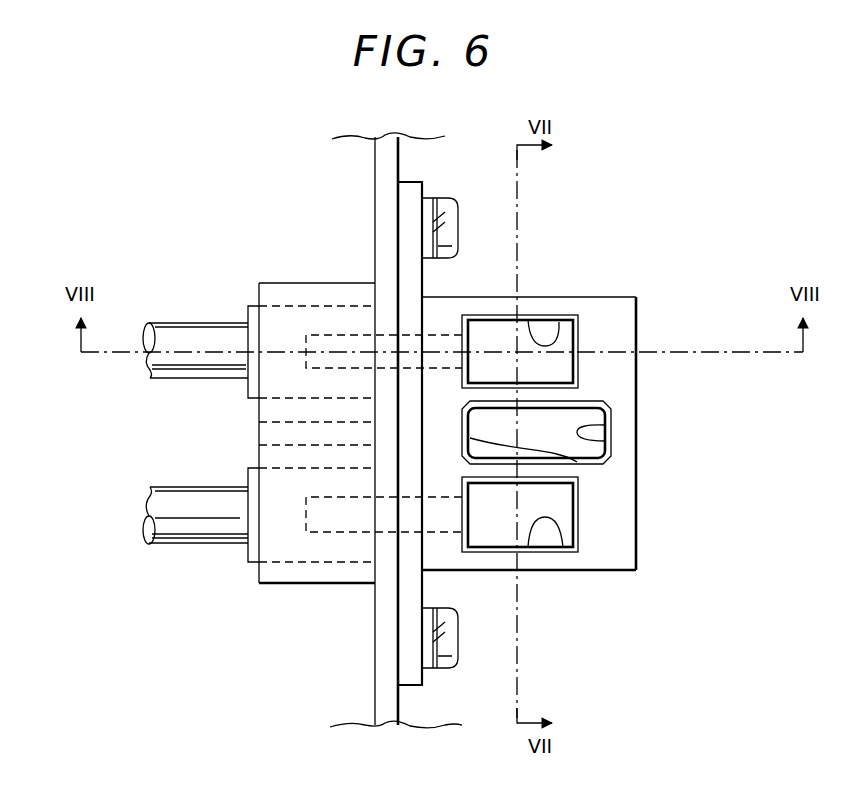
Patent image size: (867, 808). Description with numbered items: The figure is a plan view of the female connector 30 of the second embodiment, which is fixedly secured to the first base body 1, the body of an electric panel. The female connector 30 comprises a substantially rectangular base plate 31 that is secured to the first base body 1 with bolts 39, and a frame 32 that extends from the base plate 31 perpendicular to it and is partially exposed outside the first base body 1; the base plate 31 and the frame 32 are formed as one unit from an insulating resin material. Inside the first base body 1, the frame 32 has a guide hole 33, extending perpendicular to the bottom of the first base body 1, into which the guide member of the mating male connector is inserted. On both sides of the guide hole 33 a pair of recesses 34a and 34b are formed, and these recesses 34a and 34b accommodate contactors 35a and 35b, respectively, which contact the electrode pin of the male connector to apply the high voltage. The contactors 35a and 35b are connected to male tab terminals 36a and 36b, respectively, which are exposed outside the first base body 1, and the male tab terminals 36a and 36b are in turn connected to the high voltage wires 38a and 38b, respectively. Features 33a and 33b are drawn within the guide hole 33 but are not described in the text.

The first base body 1 is at (388, 702).
The female connector 30 is at (230, 173).
The base plate 31 is at (408, 655).
The frame 32 is at (640, 339).
The guide hole 33 is at (556, 425).
The engaging tongue 33a is at (605, 441).
The guide surface 33b is at (577, 462).
The recess 34a is at (579, 337).
The recess 34b is at (580, 523).
The contactor 35a is at (559, 322).
The contactor 35b is at (563, 547).
The male tab terminal 36a is at (338, 347).
The male tab terminal 36b is at (330, 515).
The high voltage wire 38a is at (193, 337).
The high voltage wire 38b is at (193, 523).
The bolt 39 is at (448, 225).